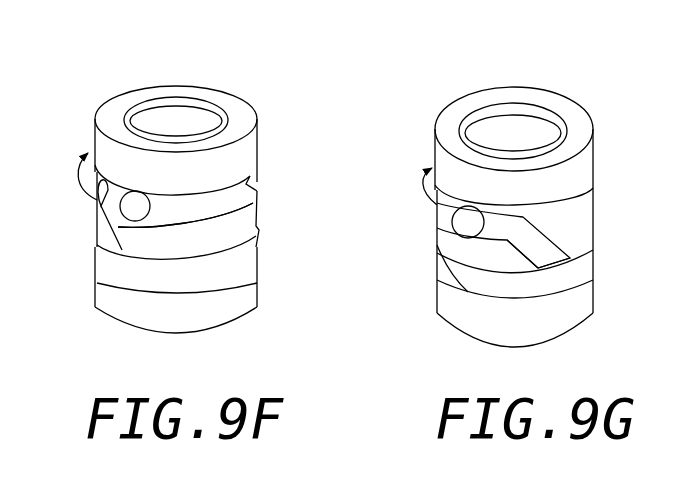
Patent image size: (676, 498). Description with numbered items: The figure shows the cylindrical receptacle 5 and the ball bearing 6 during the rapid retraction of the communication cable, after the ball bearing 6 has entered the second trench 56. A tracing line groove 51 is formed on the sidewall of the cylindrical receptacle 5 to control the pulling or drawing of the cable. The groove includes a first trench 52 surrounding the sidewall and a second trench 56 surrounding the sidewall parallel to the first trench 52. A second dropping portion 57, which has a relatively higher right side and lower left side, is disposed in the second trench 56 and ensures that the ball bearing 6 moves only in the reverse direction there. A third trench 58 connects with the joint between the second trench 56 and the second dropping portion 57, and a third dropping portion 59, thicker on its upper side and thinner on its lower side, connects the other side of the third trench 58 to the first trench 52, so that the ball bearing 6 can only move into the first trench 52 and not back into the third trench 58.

In FIG. 9F, the cylindrical receptacle 5 is at (117, 92).
In FIG. 9F, the tracing line groove 51 is at (85, 197).
In FIG. 9G, the tracing line groove 51 is at (430, 212).
In FIG. 9F, the ball bearing 6 is at (130, 215).
In FIG. 9G, the ball bearing 6 is at (466, 226).
In FIG. 9F, the second trench 56 is at (190, 212).
In FIG. 9G, the second trench 56 is at (577, 215).
In FIG. 9F, the first trench 52 is at (223, 267).
In FIG. 9G, the first trench 52 is at (563, 267).
In FIG. 9G, the second dropping portion 57 is at (563, 248).
In FIG. 9G, the third trench 58 is at (525, 243).
In FIG. 9G, the third dropping portion 59 is at (550, 267).